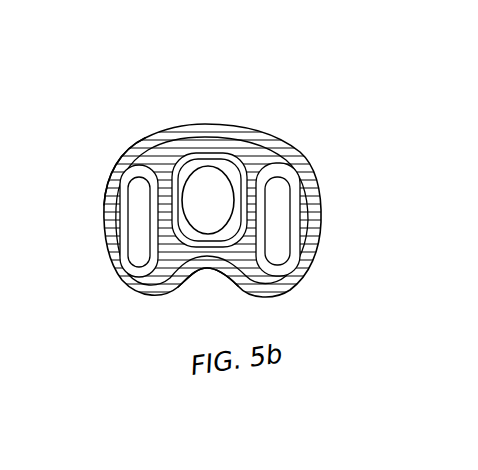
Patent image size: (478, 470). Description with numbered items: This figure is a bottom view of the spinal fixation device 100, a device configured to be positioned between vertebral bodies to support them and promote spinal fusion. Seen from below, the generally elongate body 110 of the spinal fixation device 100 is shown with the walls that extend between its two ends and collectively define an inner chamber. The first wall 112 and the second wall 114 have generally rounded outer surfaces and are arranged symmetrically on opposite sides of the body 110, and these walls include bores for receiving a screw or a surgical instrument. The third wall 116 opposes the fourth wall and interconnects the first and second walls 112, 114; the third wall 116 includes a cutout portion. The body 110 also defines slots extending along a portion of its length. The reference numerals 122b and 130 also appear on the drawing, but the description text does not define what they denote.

The spinal fixation device 100 is at (214, 237).
The body 110 is at (210, 127).
The first wall 112 is at (315, 208).
The second wall 114 is at (103, 230).
The third wall 116 is at (208, 272).
The left slot 122b is at (145, 155).
The right slot 130 is at (270, 150).